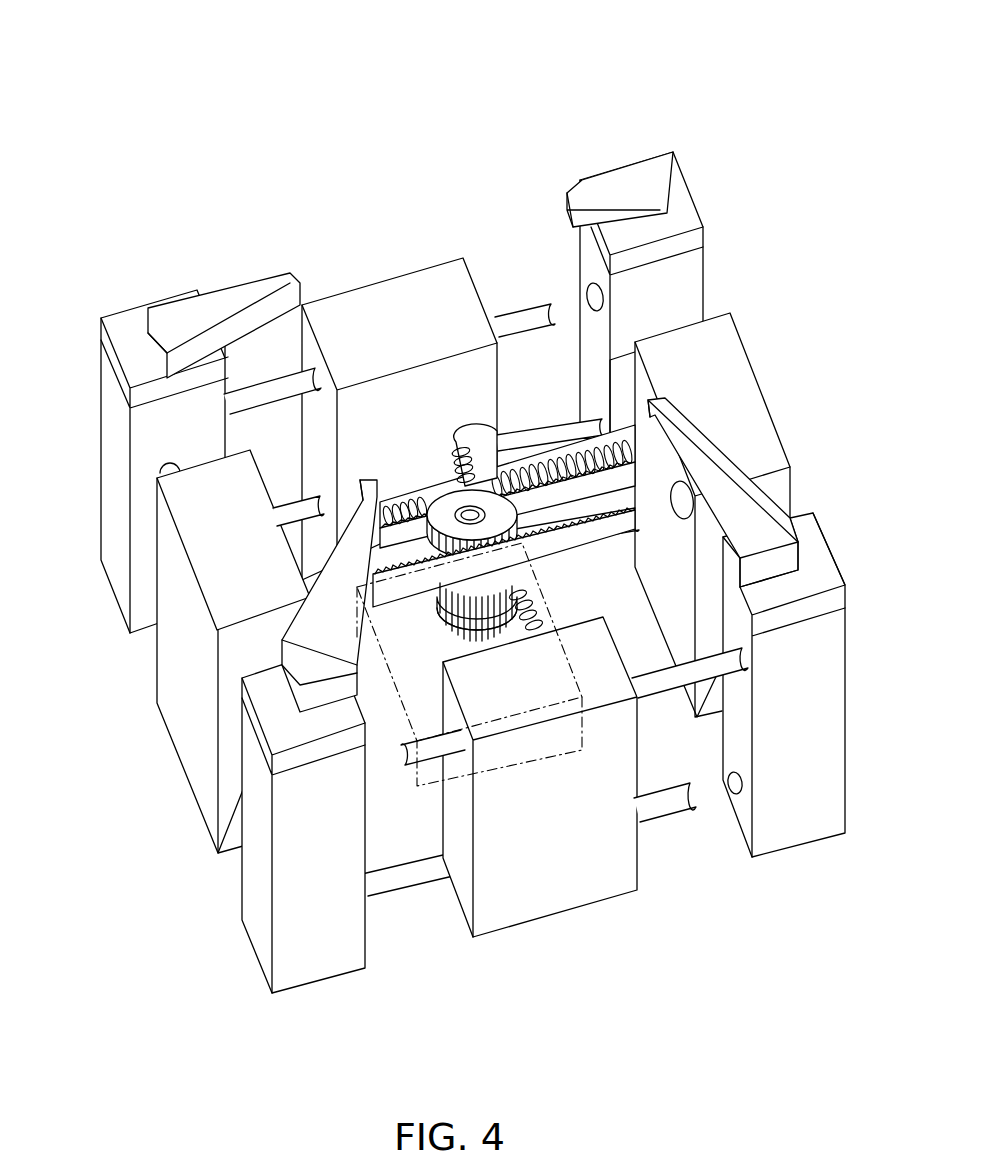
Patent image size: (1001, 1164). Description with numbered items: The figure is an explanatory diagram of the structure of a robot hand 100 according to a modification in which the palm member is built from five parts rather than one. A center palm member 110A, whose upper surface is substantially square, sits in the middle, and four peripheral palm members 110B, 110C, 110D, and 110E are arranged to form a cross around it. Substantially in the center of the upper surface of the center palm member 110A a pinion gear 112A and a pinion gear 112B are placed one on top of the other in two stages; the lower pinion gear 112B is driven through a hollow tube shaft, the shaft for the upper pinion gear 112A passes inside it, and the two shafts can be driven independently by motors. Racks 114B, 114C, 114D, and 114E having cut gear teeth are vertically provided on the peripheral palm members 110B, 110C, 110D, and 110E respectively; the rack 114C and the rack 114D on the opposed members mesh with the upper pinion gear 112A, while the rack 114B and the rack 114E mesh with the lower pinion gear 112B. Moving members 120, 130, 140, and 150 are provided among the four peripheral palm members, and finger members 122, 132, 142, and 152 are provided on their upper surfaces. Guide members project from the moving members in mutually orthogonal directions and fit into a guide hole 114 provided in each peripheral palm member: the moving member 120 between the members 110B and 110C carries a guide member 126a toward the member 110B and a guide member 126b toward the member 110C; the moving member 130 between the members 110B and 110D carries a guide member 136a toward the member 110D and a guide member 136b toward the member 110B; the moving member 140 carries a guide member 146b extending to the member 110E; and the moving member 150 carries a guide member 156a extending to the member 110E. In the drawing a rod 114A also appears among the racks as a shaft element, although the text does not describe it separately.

The robot hand 100 is at (237, 97).
The center palm member 110A is at (555, 760).
The peripheral palm member 110B is at (380, 283).
The peripheral palm member 110C is at (167, 720).
The peripheral palm member 110D is at (763, 400).
The peripheral palm member 110E is at (535, 775).
The pinion gear 112A is at (440, 478).
The pinion gear 112B is at (517, 604).
The guide hole 114 is at (320, 492).
The shaft rod 114A is at (568, 531).
The rack 114B is at (467, 420).
The rack 114C is at (297, 565).
The rack 114D is at (652, 398).
The rack 114E is at (455, 648).
The moving member 120 is at (88, 370).
The finger member 122 is at (250, 297).
The guide member 126a is at (228, 398).
The guide member 126b is at (165, 457).
The moving member 130 is at (707, 272).
The finger member 132 is at (607, 178).
The guide member 136a is at (507, 486).
The guide member 136b is at (553, 428).
The moving member 140 is at (247, 953).
The finger member 142 is at (300, 597).
The guide member 146b is at (410, 890).
The moving member 150 is at (848, 782).
The finger member 152 is at (750, 465).
The guide member 156a is at (660, 705).